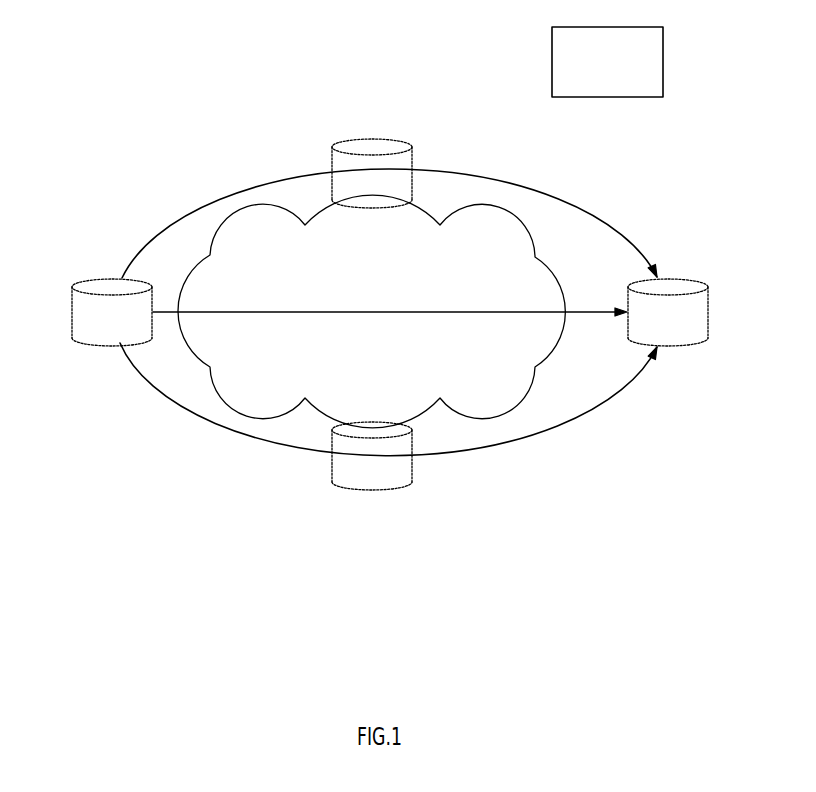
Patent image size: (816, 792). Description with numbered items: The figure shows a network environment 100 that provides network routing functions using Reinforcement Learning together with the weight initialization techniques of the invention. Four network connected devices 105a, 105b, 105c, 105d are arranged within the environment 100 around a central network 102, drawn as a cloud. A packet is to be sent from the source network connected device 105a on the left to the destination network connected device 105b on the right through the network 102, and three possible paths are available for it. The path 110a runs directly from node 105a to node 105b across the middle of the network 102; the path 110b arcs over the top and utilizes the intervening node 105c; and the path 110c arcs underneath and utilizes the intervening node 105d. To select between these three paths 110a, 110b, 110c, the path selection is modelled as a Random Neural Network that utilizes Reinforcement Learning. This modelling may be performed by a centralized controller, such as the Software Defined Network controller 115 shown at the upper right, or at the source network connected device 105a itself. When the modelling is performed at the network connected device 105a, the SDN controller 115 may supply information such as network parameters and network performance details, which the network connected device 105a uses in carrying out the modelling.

The network environment 100 is at (151, 79).
The network 102 is at (552, 353).
The network connected device 105a is at (72, 312).
The network connected device 105b is at (709, 312).
The network connected device 105c is at (388, 136).
The network connected device 105d is at (371, 490).
The path 110a is at (345, 310).
The path 110b is at (213, 199).
The path 110c is at (212, 428).
The Software Defined Network (SDN) controller 115 is at (600, 98).